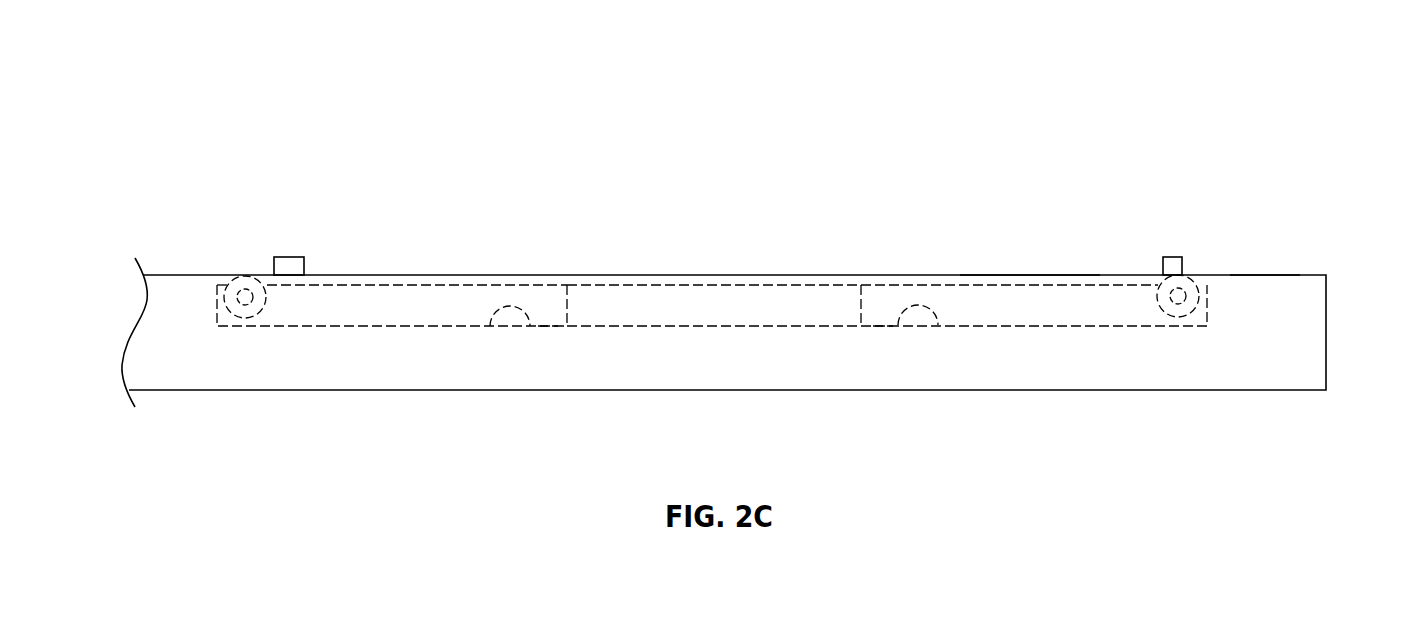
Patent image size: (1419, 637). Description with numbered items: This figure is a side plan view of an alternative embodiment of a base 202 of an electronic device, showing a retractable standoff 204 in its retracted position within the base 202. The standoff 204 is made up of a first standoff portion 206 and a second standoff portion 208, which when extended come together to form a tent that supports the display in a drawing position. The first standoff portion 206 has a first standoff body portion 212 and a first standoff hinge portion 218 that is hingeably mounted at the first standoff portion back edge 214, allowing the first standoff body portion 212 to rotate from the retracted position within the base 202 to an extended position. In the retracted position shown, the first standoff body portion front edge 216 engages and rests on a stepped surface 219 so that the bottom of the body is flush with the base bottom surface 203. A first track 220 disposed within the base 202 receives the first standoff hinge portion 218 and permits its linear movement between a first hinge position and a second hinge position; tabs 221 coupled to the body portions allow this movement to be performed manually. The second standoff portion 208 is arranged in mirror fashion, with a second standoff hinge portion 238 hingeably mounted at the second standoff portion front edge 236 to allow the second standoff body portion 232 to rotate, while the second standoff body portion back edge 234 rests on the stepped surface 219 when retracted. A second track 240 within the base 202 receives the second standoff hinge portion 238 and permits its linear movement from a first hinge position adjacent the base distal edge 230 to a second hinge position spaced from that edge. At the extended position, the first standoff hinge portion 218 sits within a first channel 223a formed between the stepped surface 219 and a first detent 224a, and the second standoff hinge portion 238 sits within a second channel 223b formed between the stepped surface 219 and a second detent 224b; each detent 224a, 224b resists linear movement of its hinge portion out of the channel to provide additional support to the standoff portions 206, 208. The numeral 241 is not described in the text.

The base 202 is at (1200, 58).
The base bottom surface 203 is at (1265, 275).
The retractable standoff 204 is at (960, 121).
The first standoff portion 206 is at (362, 283).
The second standoff portion 208 is at (1000, 275).
The first standoff body portion 212 is at (460, 283).
The first standoff portion back edge 214 is at (270, 283).
The first standoff body portion front edge 216 is at (573, 283).
The first standoff hinge portion 218 is at (232, 282).
The stepped surface 219 is at (708, 313).
The first track 220 is at (292, 315).
The tabs 221 is at (288, 257).
The first channel 223a is at (548, 313).
The second channel 223b is at (883, 313).
The first detent 224a is at (515, 308).
The second detent 224b is at (928, 307).
The base distal edge 230 is at (1326, 313).
The second standoff body portion 232 is at (1042, 275).
The second standoff body portion back edge 234 is at (850, 275).
The second standoff portion front edge 236 is at (1165, 288).
The second standoff hinge portion 238 is at (1195, 283).
The second track 240 is at (1038, 313).
The second protrusion 241 is at (1177, 257).